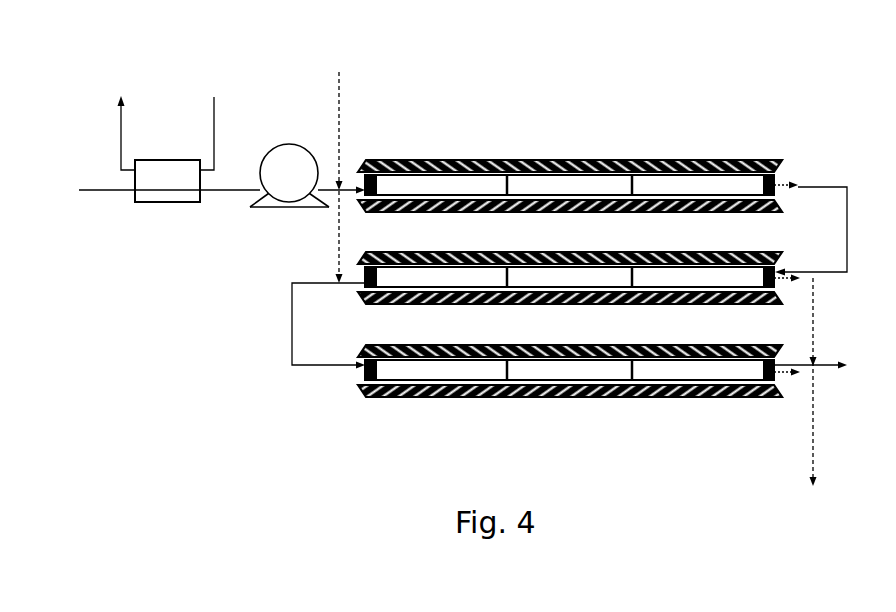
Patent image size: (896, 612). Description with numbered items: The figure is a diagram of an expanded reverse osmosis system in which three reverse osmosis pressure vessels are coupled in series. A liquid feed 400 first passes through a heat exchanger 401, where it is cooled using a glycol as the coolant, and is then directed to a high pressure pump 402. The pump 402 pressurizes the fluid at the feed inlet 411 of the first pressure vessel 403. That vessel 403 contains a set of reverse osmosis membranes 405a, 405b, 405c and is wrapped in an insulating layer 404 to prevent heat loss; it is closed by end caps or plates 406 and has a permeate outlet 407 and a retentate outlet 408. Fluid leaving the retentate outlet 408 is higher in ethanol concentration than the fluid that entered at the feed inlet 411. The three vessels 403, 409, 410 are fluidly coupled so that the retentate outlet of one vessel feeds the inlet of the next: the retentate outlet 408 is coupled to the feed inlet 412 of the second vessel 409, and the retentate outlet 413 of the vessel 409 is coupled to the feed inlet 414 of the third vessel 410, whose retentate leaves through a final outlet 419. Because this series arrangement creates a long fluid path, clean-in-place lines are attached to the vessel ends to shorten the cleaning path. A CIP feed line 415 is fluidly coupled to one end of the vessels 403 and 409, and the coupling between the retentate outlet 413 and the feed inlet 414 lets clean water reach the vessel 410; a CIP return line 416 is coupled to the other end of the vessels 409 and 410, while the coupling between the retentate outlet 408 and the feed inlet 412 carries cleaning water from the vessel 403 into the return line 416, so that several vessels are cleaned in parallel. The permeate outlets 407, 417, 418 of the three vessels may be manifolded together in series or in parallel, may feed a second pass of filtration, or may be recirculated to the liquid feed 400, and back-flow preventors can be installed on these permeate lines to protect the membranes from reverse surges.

The liquid feed 400 is at (65, 211).
The heat exchanger 401 is at (157, 203).
The high pressure pump 402 is at (267, 210).
The first pressure vessel 403 is at (603, 166).
The insulating layer 404 is at (656, 160).
The reverse osmosis membrane 405a is at (428, 193).
The reverse osmosis membrane 405b is at (584, 193).
The reverse osmosis membrane 405c is at (683, 193).
The end caps or plates 406 is at (783, 172).
The permeate outlet 407 is at (800, 184).
The retentate outlet 408 is at (785, 198).
The pressure vessel 409 is at (580, 249).
The pressure vessel 410 is at (582, 342).
The feed inlet 411 is at (354, 178).
The feed inlet 412 is at (784, 272).
The retentate outlet 413 is at (355, 284).
The feed inlet 414 is at (343, 366).
The clean-in-place feed line 415 is at (352, 41).
The CIP return line 416 is at (833, 538).
The permeate outlet 417 is at (783, 290).
The permeate outlet 418 is at (783, 383).
The retentate outlet 419 is at (843, 371).